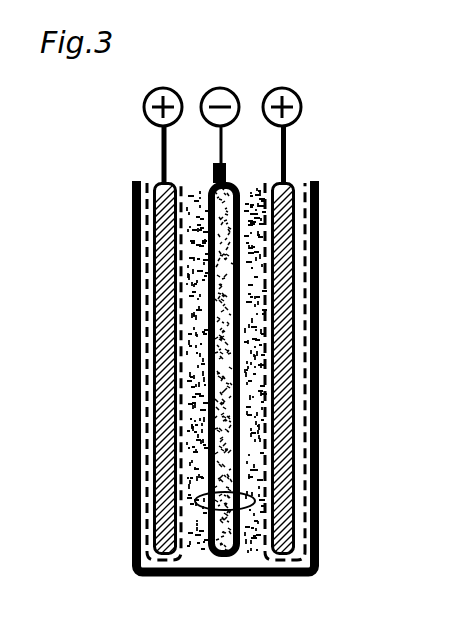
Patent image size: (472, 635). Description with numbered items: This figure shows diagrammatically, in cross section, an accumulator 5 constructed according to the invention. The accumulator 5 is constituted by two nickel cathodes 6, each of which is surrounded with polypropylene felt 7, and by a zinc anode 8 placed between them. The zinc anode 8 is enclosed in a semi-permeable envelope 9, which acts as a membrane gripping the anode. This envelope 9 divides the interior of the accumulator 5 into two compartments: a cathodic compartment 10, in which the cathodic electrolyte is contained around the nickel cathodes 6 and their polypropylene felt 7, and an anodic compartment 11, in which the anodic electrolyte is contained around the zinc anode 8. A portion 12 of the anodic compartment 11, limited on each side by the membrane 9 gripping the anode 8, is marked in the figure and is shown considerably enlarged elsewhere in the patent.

The accumulator 5 is at (318, 232).
The nickel cathodes 6 is at (170, 570).
The polypropylene felt 7 is at (307, 390).
The zinc anode 8 is at (225, 445).
The semi-permeable envelope 9 is at (243, 342).
The cathodic compartment 10 is at (295, 476).
The anodic compartment 11 is at (218, 404).
The portion of the anodic compartment 12 is at (193, 502).